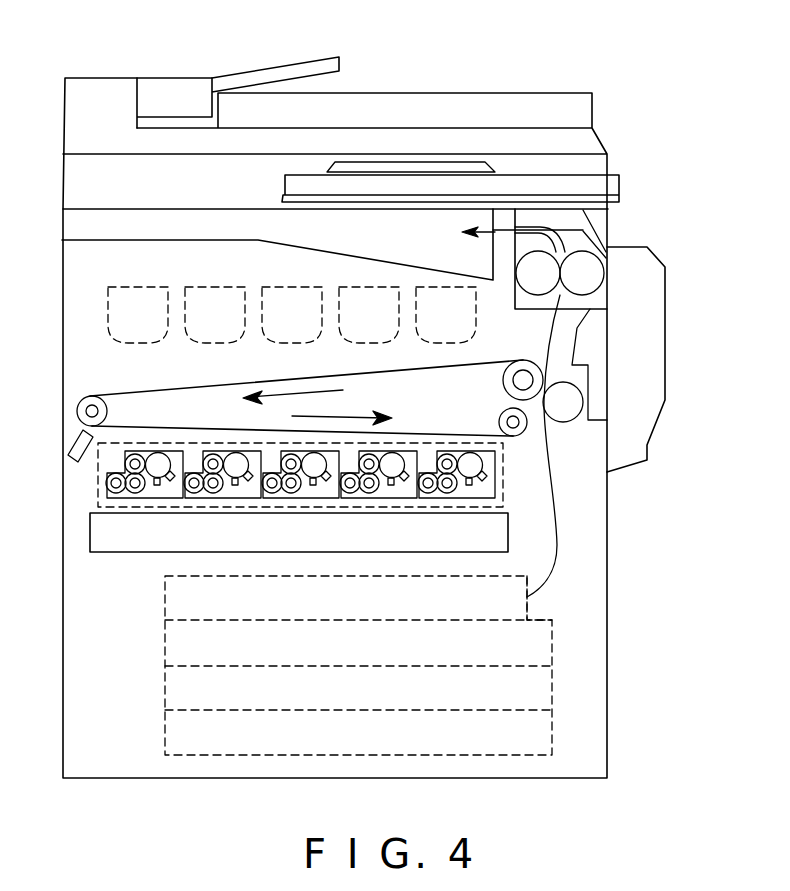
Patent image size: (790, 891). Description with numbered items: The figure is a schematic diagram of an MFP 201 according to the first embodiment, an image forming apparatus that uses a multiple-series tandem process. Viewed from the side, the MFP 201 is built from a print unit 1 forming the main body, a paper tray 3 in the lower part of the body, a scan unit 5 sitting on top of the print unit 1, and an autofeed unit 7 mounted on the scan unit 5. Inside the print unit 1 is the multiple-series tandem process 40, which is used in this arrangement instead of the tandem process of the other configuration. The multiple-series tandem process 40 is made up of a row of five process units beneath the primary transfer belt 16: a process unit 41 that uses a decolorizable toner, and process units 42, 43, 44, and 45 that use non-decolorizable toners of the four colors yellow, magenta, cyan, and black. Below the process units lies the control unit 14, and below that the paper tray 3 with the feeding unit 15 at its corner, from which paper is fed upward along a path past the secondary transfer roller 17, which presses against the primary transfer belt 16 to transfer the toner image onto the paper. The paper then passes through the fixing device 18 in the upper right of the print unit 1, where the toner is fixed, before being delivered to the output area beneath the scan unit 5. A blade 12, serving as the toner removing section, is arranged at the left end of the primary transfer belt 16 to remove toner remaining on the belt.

The MFP 201 is at (541, 68).
The autofeed unit 7 is at (162, 77).
The scan unit 5 is at (62, 183).
The print unit 1 is at (718, 210).
The fixing device 18 is at (597, 223).
The secondary transfer roller 17 is at (583, 402).
The primary transfer belt 16 is at (118, 391).
The blade 12 is at (72, 440).
The multiple-series tandem process 40 is at (97, 475).
The process unit 41 is at (145, 498).
The process unit 42 is at (223, 498).
The process unit 43 is at (301, 498).
The process unit 44 is at (379, 498).
The process unit 45 is at (457, 498).
The control unit 14 is at (508, 530).
The feeding unit 15 is at (527, 607).
The paper tray 3 is at (665, 575).